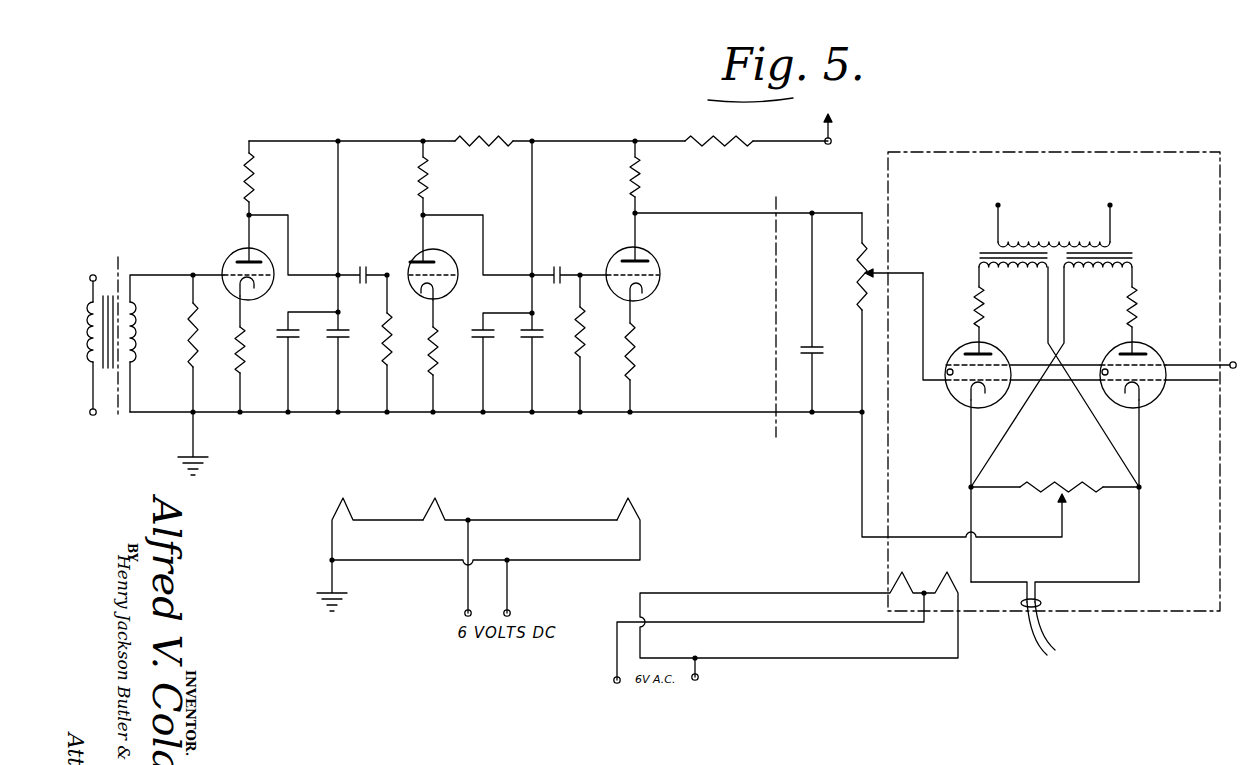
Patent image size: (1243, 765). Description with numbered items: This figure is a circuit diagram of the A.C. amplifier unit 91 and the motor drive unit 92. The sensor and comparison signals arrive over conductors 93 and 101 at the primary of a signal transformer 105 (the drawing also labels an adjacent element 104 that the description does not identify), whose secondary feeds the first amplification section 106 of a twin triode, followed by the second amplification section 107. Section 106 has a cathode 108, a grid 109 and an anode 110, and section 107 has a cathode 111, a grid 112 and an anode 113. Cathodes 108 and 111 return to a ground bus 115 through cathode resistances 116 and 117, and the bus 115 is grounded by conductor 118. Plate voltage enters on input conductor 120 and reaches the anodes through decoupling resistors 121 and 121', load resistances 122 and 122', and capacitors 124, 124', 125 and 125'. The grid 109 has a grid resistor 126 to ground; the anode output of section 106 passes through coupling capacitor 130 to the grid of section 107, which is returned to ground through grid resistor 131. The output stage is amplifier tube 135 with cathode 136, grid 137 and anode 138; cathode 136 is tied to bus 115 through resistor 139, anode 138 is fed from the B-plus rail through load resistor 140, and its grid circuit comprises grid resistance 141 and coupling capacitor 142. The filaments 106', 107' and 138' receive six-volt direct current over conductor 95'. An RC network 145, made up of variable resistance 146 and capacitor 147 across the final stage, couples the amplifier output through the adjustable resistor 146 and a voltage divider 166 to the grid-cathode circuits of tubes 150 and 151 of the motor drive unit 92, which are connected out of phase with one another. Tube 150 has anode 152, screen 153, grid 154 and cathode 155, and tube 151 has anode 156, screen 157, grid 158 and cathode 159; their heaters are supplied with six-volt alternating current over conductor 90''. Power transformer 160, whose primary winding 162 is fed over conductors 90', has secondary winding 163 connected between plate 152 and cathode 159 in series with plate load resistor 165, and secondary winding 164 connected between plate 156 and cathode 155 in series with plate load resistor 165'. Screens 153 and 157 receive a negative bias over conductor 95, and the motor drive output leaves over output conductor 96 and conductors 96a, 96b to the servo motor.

The A.C. amplifier unit 91 is at (557, 112).
The motor drive unit 92 is at (1110, 111).
The conductor 93 is at (90, 415).
The conductor 95 is at (1213, 373).
The conductor 95' is at (419, 570).
The output conductor 96 is at (1051, 644).
The conductor 96a is at (973, 564).
The conductor 96b is at (1139, 557).
The conductors 90' is at (1053, 195).
The conductor 90'' is at (742, 644).
The conductor 101 is at (90, 276).
The input transformer 104 is at (145, 331).
The signal transformer 105 is at (106, 296).
The first amplification section 106 is at (275, 271).
The filament 106' is at (377, 517).
The second amplification section 107 is at (420, 250).
The filament 107' is at (520, 497).
The cathode 108 is at (257, 299).
The grid 109 is at (262, 278).
The anode 110 is at (263, 264).
The cathode 111 is at (446, 287).
The grid 112 is at (412, 262).
The anode 113 is at (438, 258).
The ground bus 115 is at (224, 414).
The cathode resistance 116 is at (237, 370).
The cathode resistance 117 is at (438, 336).
The conductor 118 is at (191, 443).
The input conductor 120 is at (830, 118).
The decoupling resistor 121 is at (740, 155).
The decoupling resistor 121' is at (487, 160).
The load resistance 122 is at (275, 178).
The load resistance 122' is at (457, 178).
The capacitor 124 is at (307, 362).
The capacitor 124' is at (502, 362).
The capacitor 125 is at (352, 276).
The capacitor 125' is at (546, 276).
The grid resistor 126 is at (190, 338).
The coupling capacitor 130 is at (356, 264).
The grid resistor 131 is at (392, 334).
The amplifier tube 135 is at (664, 263).
The cathode 136 is at (646, 302).
The grid 137 is at (662, 288).
The anode 138 is at (653, 268).
The filament 138' is at (495, 519).
The resistor 139 is at (641, 357).
The load resistor 140 is at (631, 178).
The grid resistance 141 is at (585, 360).
The coupling capacitor 142 is at (556, 262).
The RC network 145 is at (834, 212).
The variable resistance 146 is at (858, 266).
The capacitor 147 is at (818, 346).
The tube 150 is at (992, 378).
The tube 151 is at (1152, 378).
The anode 152 is at (990, 352).
The screen 153 is at (1000, 364).
The grid 154 is at (1016, 382).
The cathode 155 is at (988, 396).
The anode 156 is at (1140, 351).
The screen 157 is at (1150, 363).
The grid 158 is at (1152, 378).
The cathode 159 is at (1147, 403).
The power transformer 160 is at (1077, 239).
The primary winding 162 is at (1088, 238).
The secondary winding 163 is at (1012, 278).
The secondary winding 164 is at (1093, 277).
The plate load resistor 165 is at (956, 301).
The plate load resistor 165' is at (1164, 315).
The voltage divider 166 is at (1050, 485).